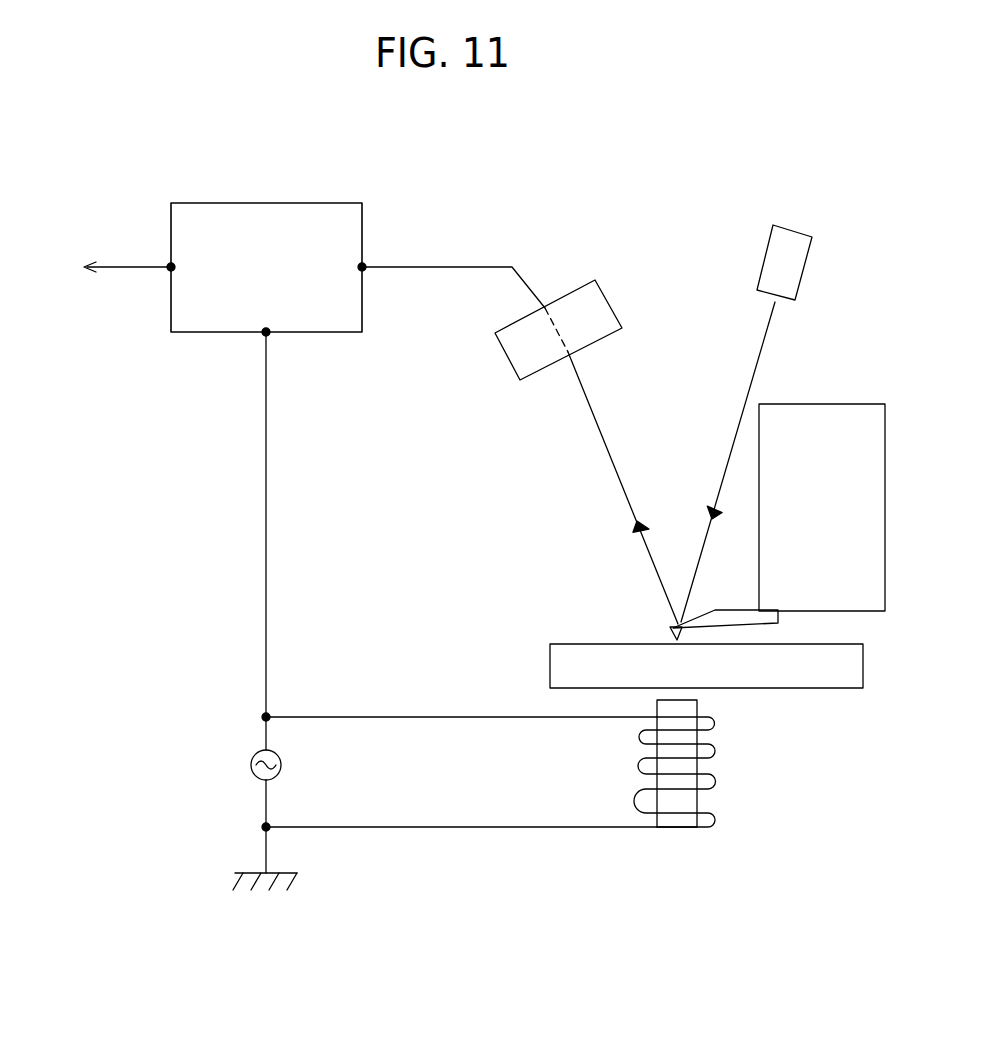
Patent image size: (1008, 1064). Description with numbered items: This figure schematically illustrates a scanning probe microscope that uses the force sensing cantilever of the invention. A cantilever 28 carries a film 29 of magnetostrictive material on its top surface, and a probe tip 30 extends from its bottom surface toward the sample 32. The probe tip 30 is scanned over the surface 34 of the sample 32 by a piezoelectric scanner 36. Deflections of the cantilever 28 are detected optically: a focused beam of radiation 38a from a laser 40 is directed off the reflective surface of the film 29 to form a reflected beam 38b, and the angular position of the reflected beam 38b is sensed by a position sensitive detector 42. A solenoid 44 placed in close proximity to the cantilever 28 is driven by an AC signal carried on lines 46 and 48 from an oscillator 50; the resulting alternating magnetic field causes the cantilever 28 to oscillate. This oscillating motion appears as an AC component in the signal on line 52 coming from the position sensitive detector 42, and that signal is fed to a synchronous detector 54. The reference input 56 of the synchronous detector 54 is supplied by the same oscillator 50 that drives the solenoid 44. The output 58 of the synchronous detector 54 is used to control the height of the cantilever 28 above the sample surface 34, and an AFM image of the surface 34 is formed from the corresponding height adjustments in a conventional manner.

The cantilever 28 is at (693, 622).
The film 29 is at (670, 623).
The probe tip 30 is at (673, 634).
The sample 32 is at (832, 688).
The surface 34 is at (557, 644).
The piezoelectric scanner 36 is at (856, 404).
The focused beam of radiation 38a is at (738, 428).
The reflected beam 38b is at (604, 448).
The laser 40 is at (793, 230).
The position sensitive detector 42 is at (513, 348).
The solenoid 44 is at (697, 805).
The line 46 is at (425, 718).
The line 48 is at (500, 828).
The oscillator 50 is at (252, 765).
The line 52 is at (433, 267).
The synchronous detector 54 is at (210, 320).
The reference input 56 is at (266, 333).
The output 58 is at (165, 272).